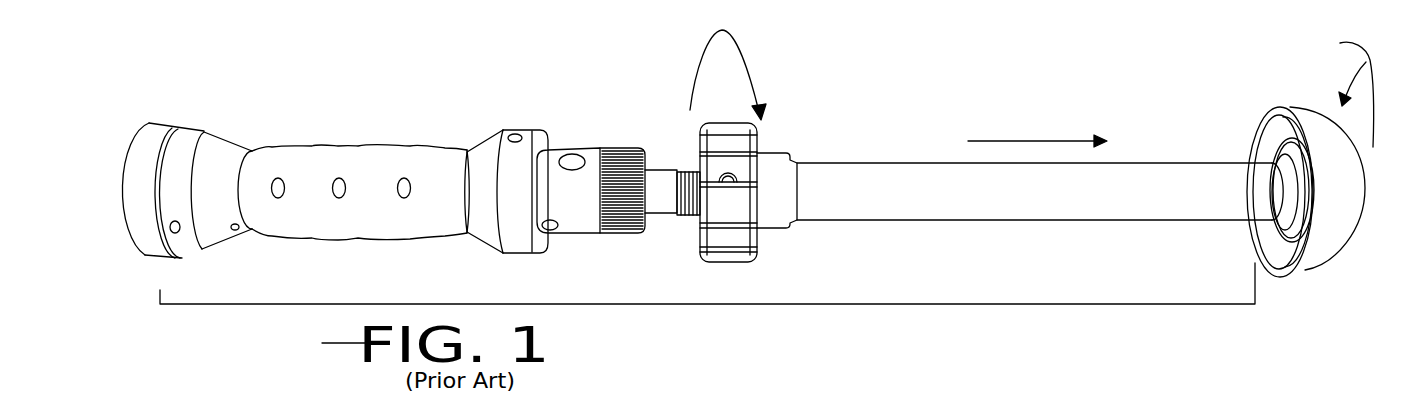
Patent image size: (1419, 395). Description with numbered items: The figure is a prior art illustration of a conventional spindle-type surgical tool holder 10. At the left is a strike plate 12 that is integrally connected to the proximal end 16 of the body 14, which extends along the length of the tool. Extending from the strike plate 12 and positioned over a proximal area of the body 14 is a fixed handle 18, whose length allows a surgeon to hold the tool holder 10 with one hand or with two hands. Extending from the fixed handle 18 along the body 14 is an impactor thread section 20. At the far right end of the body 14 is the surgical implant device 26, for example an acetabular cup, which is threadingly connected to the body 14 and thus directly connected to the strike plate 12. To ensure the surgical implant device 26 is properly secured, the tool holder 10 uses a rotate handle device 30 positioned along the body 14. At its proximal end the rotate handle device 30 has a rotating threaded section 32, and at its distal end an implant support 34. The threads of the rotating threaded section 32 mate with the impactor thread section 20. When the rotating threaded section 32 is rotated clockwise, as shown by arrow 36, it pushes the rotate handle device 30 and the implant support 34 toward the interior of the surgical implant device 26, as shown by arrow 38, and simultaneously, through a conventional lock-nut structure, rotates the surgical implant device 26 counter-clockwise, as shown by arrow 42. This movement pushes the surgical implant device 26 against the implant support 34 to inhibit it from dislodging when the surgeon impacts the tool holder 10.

The spindle-type surgical tool holder 10 is at (1149, 128).
The strike plate 12 is at (137, 124).
The body 14 is at (850, 304).
The proximal end 16 is at (150, 258).
The fixed handle 18 is at (323, 147).
The impactor thread section 20 is at (690, 216).
The surgical implant device 26 is at (1345, 252).
The rotate handle device 30 is at (848, 162).
The rotating threaded section 32 is at (712, 122).
The implant support 34 is at (1255, 138).
The arrow 36 is at (752, 56).
The arrow 38 is at (1005, 140).
The arrow 42 is at (1341, 87).